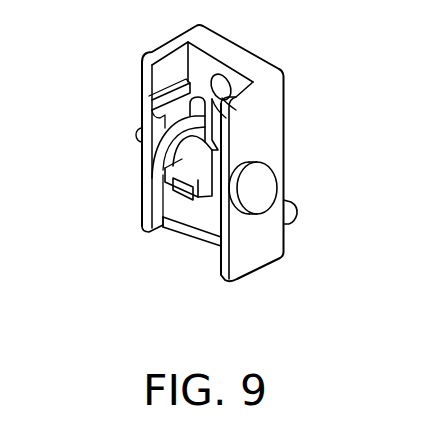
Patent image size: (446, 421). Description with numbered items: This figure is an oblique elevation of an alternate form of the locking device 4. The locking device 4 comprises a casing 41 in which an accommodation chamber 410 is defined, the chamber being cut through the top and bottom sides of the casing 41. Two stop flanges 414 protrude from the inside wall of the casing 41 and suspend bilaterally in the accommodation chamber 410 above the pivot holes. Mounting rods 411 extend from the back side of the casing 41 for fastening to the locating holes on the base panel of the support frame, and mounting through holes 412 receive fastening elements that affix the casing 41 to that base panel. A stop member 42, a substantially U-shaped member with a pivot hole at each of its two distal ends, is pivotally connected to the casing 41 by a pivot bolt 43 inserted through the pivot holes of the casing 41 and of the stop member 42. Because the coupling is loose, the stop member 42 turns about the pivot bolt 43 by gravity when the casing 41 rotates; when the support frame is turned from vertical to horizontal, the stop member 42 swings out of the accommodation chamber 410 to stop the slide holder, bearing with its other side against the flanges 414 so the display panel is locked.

The locking device 4 is at (128, 80).
The casing 41 is at (268, 125).
The accommodation chamber 410 is at (192, 235).
The mounting rods 411 is at (296, 214).
The mounting through holes 412 is at (219, 90).
The stop flanges 414 is at (160, 113).
The stop member 42 is at (188, 196).
The pivot bolt 43 is at (187, 157).